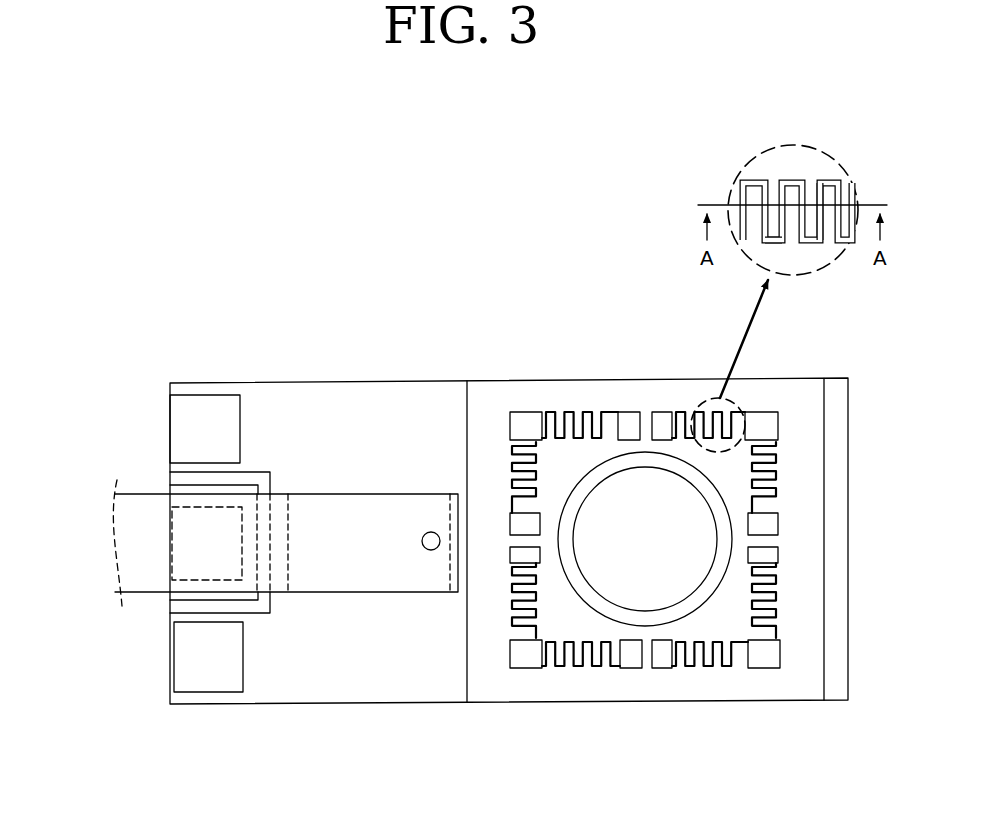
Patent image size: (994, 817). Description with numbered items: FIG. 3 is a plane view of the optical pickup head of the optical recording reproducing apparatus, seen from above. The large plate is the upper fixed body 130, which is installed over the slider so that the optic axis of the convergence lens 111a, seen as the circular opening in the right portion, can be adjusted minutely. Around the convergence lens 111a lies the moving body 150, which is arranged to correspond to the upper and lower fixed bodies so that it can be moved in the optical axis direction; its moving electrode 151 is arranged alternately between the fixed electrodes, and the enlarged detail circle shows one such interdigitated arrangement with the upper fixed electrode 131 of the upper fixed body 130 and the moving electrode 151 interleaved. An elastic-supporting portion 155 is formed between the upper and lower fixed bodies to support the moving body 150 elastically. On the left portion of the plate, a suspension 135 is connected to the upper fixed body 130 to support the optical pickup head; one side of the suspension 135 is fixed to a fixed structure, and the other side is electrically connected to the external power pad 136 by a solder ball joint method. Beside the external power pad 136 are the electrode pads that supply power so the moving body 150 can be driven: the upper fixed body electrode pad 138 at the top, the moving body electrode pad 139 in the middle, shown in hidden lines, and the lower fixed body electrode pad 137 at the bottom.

The upper fixed body 130 is at (368, 400).
The upper fixed electrode 131 is at (773, 236).
The suspension 135 is at (385, 517).
The external power pad 136 is at (177, 480).
The lower fixed body electrode pad 137 is at (183, 670).
The upper fixed body electrode pad 138 is at (177, 412).
The moving body electrode pad 139 is at (185, 538).
The moving body 150 is at (738, 455).
The moving electrode 151 is at (828, 188).
The elastic-supporting portion 155 is at (643, 656).
The convergence lens 111a is at (684, 550).